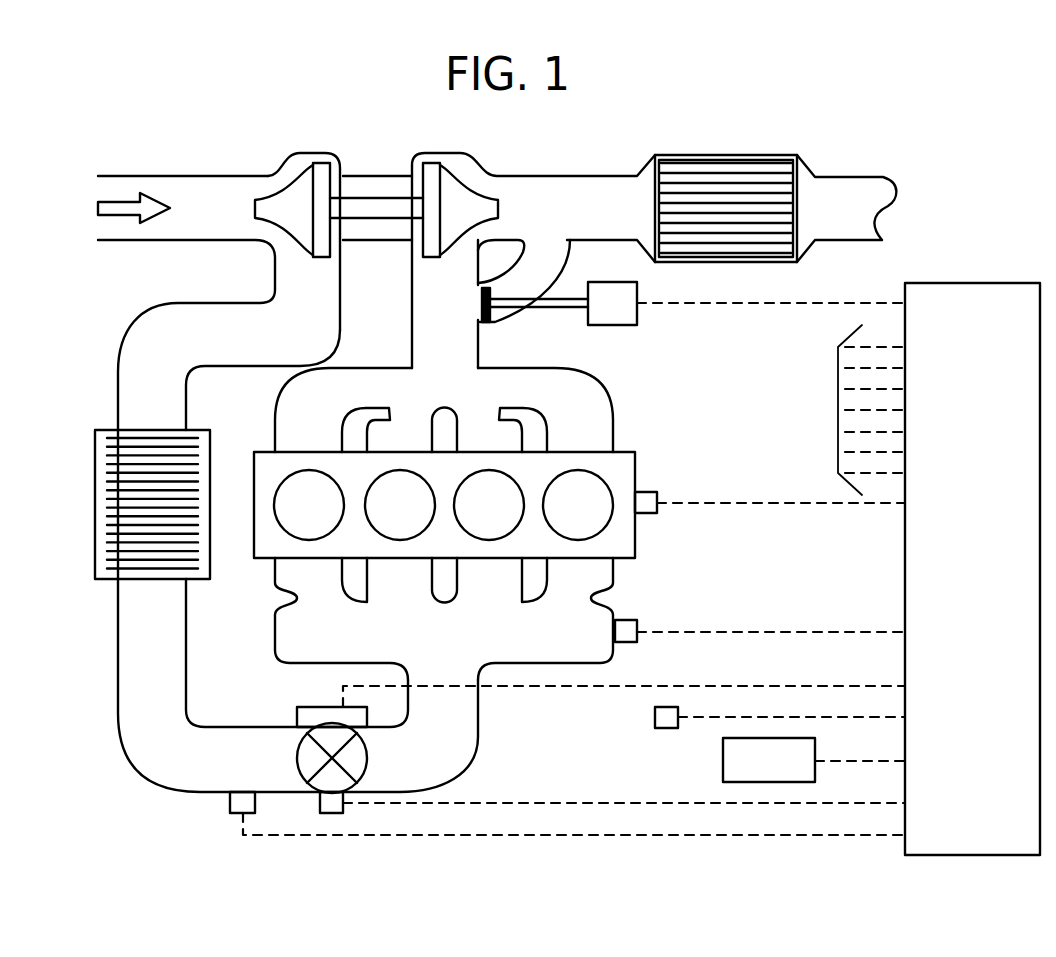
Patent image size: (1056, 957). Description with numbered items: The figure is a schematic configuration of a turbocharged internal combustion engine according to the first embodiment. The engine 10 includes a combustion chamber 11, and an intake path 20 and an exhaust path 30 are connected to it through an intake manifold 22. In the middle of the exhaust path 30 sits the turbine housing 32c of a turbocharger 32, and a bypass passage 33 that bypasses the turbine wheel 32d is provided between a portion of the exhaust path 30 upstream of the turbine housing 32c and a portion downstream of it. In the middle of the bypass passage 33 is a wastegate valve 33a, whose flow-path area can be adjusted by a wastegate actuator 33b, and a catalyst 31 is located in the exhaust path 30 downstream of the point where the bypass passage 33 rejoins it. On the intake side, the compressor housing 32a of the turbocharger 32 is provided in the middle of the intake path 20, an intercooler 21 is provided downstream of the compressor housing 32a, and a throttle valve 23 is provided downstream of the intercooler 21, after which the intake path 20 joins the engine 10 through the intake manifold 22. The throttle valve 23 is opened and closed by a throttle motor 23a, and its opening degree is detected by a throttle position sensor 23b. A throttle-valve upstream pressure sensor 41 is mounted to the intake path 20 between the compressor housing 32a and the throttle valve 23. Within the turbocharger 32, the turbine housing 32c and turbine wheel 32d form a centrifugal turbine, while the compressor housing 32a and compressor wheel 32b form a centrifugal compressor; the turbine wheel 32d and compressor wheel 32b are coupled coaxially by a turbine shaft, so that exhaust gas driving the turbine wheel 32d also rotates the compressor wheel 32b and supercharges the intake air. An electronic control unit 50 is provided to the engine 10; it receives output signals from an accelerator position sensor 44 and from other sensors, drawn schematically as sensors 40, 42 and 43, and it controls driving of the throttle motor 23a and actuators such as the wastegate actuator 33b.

The engine 10 is at (645, 557).
The combustion chamber 11 is at (617, 487).
The intake path 20 is at (212, 176).
The intercooler 21 is at (96, 576).
The intake manifold 22 is at (275, 633).
The throttle valve 23 is at (367, 752).
The throttle motor 23a is at (310, 706).
The throttle position sensor 23b is at (320, 808).
The exhaust path 30 is at (530, 176).
The catalyst 31 is at (690, 155).
The turbocharger 32 is at (384, 163).
The compressor housing 32a is at (293, 188).
The compressor wheel 32b is at (265, 175).
The turbine housing 32c is at (458, 185).
The turbine wheel 32d is at (497, 175).
The bypass passage 33 is at (577, 252).
The wastegate valve 33a is at (485, 323).
The wastegate actuator 33b is at (635, 328).
The sensor 40 is at (658, 512).
The throttle-valve upstream pressure sensor 41 is at (232, 808).
The intake pressure sensor 42 is at (637, 645).
The sensor 43 is at (655, 717).
The accelerator position sensor 44 is at (723, 755).
The electronic control unit 50 is at (965, 283).